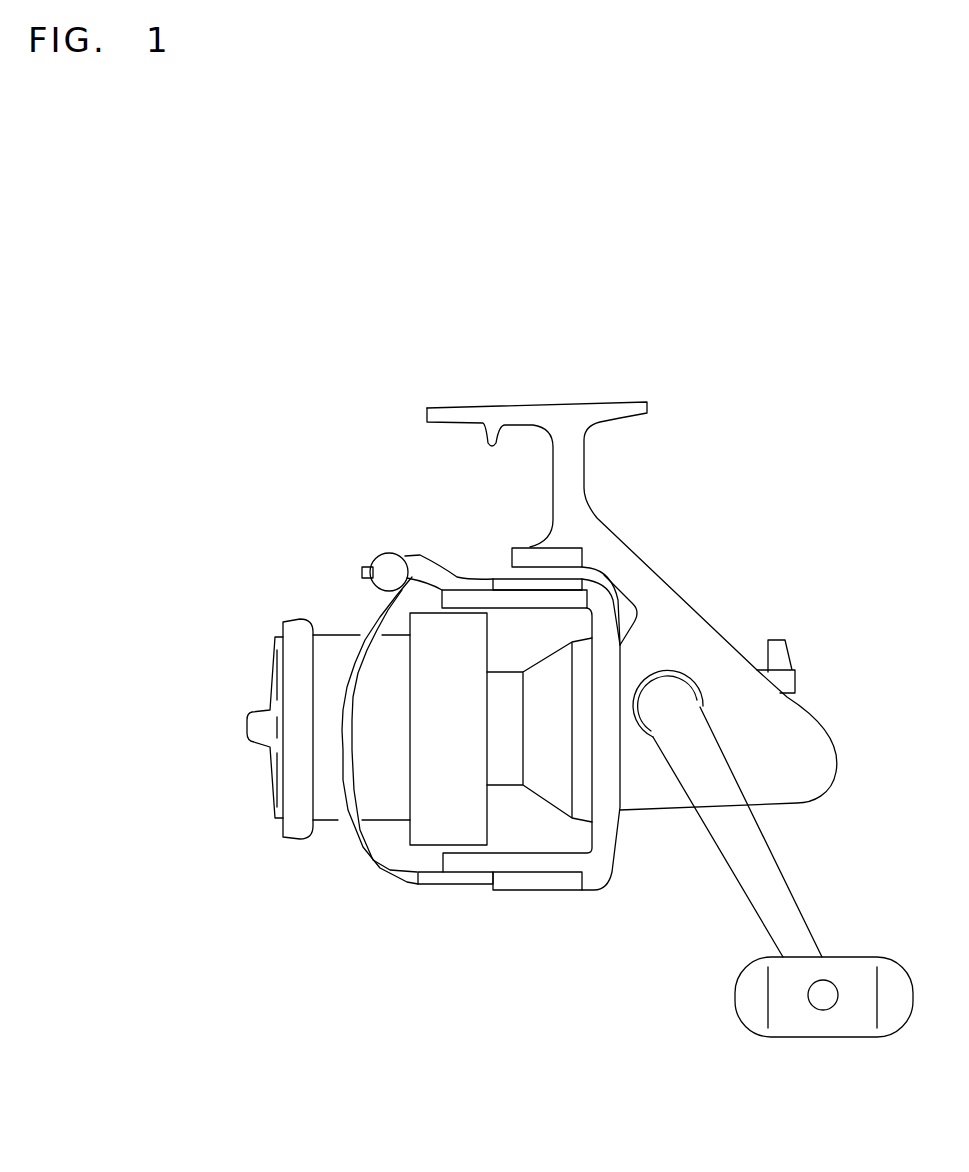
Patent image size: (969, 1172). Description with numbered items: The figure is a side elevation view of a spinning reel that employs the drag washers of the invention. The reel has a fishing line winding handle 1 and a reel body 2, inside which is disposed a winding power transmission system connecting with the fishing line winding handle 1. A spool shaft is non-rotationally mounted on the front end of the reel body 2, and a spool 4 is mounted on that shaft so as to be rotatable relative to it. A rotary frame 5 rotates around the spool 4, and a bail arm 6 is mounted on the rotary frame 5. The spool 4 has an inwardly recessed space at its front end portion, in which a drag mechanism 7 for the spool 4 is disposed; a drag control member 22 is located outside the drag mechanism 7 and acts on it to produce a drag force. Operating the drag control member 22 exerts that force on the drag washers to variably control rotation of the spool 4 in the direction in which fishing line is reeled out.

The fishing line winding handle 1 is at (738, 863).
The reel body 2 is at (782, 722).
The spool 4 is at (328, 810).
The rotary frame 5 is at (503, 580).
The bail arm 6 is at (373, 613).
The drag mechanism 7 is at (259, 651).
The drag control member 22 is at (270, 773).